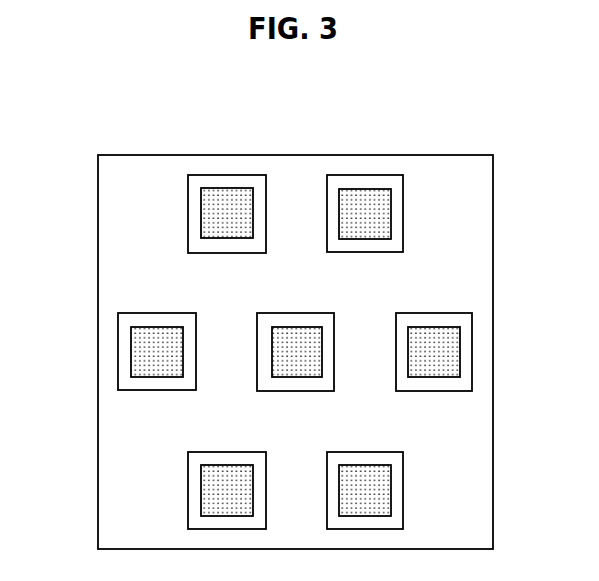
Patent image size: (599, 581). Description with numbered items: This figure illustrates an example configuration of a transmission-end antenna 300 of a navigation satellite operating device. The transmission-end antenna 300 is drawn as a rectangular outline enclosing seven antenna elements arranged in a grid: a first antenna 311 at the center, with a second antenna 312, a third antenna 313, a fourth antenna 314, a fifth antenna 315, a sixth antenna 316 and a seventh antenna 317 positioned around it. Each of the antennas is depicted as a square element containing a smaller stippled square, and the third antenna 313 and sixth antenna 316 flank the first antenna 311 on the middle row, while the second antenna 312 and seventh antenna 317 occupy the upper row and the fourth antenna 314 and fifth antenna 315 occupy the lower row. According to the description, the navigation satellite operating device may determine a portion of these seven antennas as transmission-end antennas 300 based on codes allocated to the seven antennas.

The transmission-end antenna 300 is at (419, 150).
The first antenna 311 is at (320, 318).
The second antenna 312 is at (402, 215).
The third antenna 313 is at (468, 347).
The fourth antenna 314 is at (402, 492).
The fifth antenna 315 is at (191, 492).
The sixth antenna 316 is at (122, 347).
The seventh antenna 317 is at (192, 217).